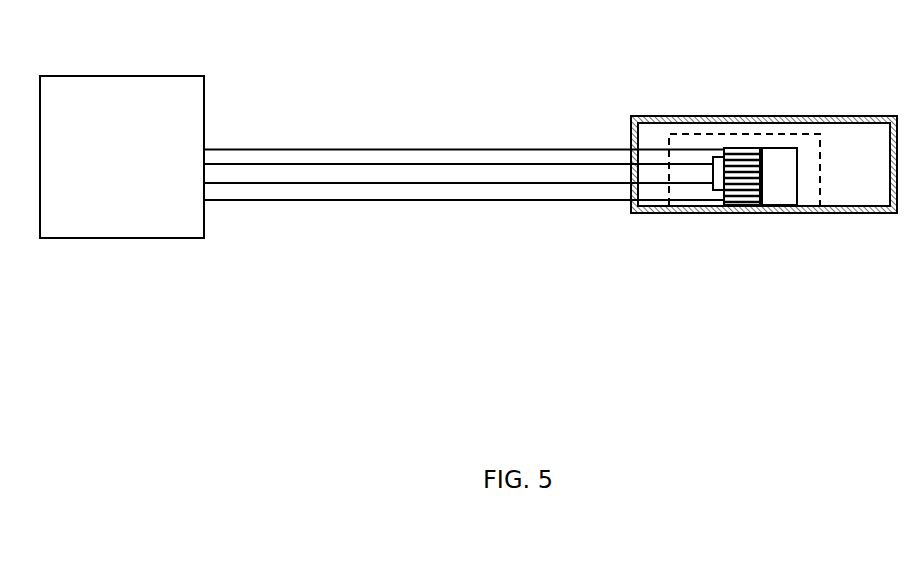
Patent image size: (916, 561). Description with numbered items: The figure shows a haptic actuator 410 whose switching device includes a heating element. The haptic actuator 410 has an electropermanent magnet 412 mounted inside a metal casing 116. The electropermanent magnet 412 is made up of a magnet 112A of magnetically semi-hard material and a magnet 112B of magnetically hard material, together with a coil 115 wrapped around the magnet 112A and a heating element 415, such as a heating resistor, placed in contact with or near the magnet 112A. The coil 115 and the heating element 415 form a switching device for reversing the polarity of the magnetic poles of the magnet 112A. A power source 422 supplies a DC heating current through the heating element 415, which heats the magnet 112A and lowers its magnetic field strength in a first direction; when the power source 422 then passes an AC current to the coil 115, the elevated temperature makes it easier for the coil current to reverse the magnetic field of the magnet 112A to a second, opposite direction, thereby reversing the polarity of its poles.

The haptic actuator 410 is at (447, 65).
The electropermanent magnet 412 is at (669, 147).
The heating element 415 is at (713, 155).
The coil 115 is at (742, 152).
The magnet 112A is at (745, 204).
The magnet 112B is at (787, 204).
The metal casing 116 is at (894, 210).
The power source 422 is at (97, 238).